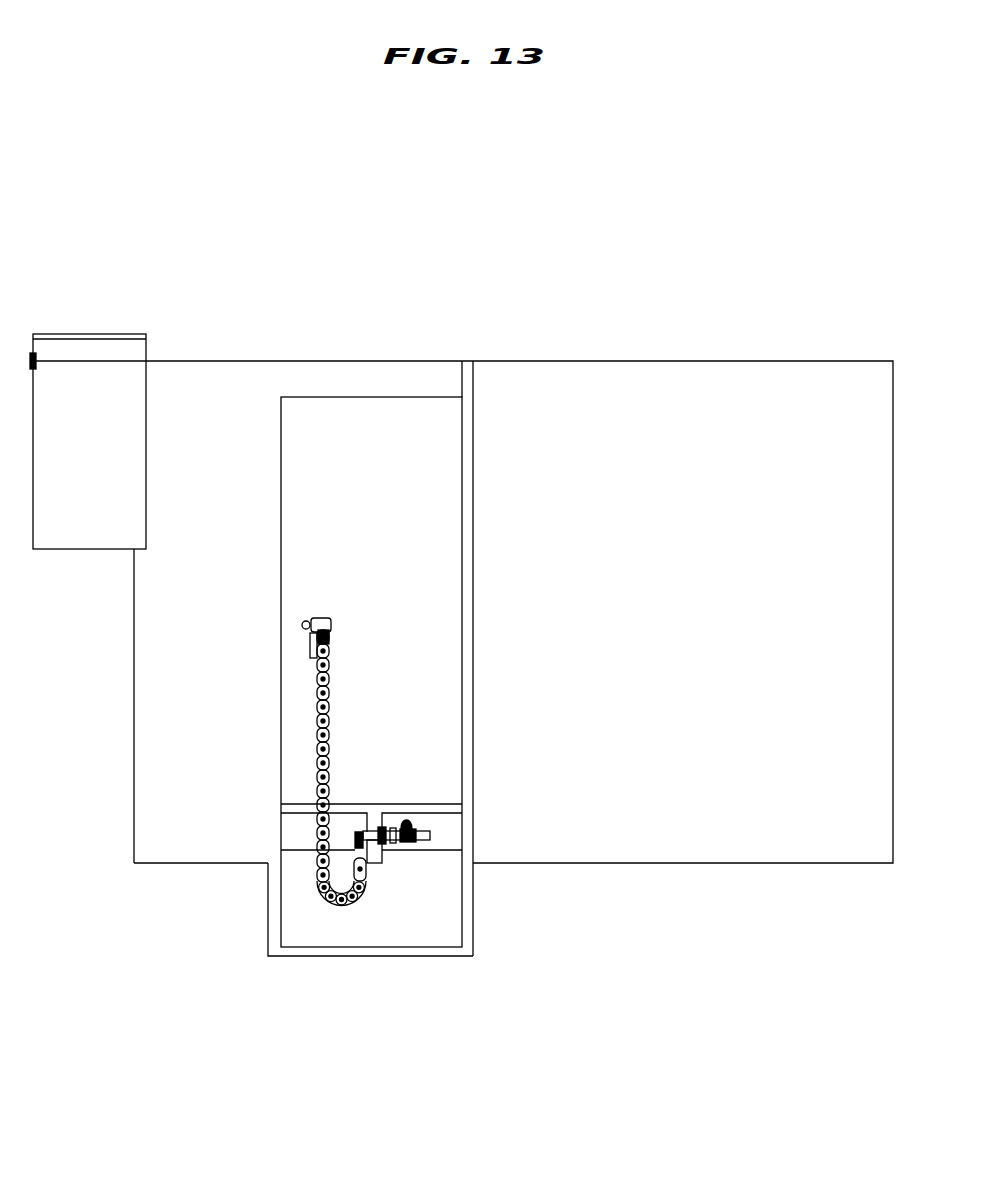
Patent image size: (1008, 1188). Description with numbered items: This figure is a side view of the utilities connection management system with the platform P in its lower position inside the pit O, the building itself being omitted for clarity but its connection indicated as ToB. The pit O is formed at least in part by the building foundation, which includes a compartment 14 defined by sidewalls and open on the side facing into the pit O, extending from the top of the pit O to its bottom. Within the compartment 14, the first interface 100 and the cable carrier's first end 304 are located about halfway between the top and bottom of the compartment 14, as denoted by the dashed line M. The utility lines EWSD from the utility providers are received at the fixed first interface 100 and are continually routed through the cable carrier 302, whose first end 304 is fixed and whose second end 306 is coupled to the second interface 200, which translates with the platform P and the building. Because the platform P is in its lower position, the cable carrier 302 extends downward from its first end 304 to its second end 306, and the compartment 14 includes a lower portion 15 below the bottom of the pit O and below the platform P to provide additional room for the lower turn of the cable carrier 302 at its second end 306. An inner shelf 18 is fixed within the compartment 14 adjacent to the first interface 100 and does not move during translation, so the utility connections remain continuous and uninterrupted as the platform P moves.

The compartment 14 is at (312, 436).
The lower portion 15 is at (432, 902).
The inner shelf 18 is at (435, 804).
The first interface 100 is at (297, 615).
The second interface 200 is at (355, 826).
The cable carrier 302 is at (349, 710).
The first end 304 is at (301, 643).
The second end 306 is at (376, 880).
The pit O is at (672, 466).
The dashed line M is at (387, 626).
The platform P is at (680, 863).
The utility lines E, W, S, D EWSD is at (278, 626).
The connection to building B ToB is at (437, 836).